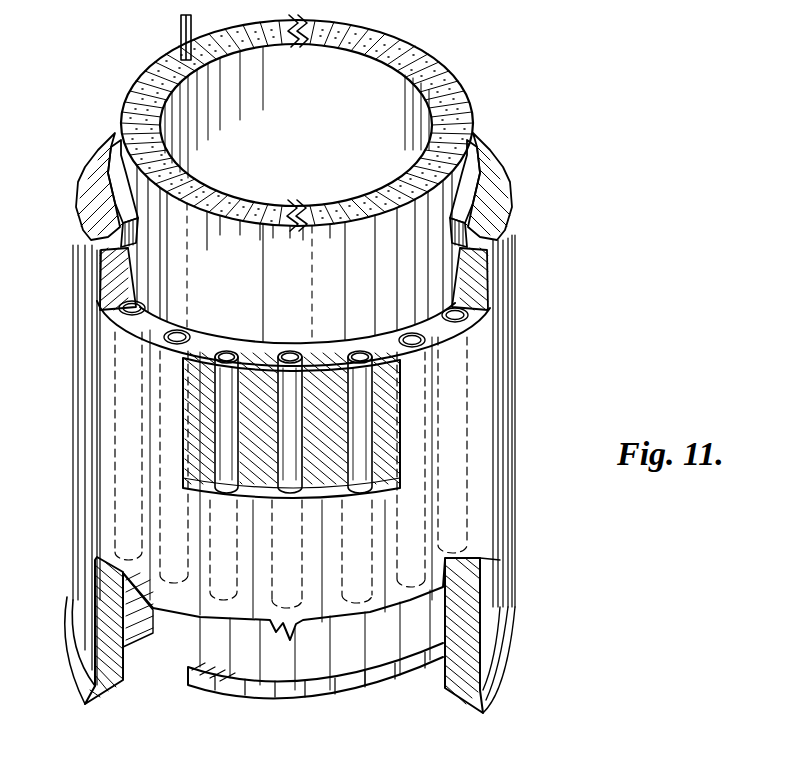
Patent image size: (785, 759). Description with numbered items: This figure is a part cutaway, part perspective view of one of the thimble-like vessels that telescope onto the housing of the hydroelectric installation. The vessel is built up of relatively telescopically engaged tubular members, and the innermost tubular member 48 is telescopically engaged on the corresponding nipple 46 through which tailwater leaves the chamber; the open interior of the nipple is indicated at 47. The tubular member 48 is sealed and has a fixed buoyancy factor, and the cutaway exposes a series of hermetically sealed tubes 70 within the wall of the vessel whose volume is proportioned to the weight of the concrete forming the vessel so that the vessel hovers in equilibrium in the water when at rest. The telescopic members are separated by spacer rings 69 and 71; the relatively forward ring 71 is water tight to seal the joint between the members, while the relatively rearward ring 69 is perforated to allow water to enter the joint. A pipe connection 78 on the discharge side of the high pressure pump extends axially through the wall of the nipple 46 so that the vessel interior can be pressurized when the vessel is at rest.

The nipple 46 is at (440, 77).
The inner cylindrical shell 47 is at (328, 161).
The tubular member 48 is at (505, 348).
The spacer ring 69 is at (507, 181).
The hermetically sealed tubes 70 is at (358, 351).
The spacer ring 71 is at (500, 683).
The pipe connection 78 is at (181, 23).